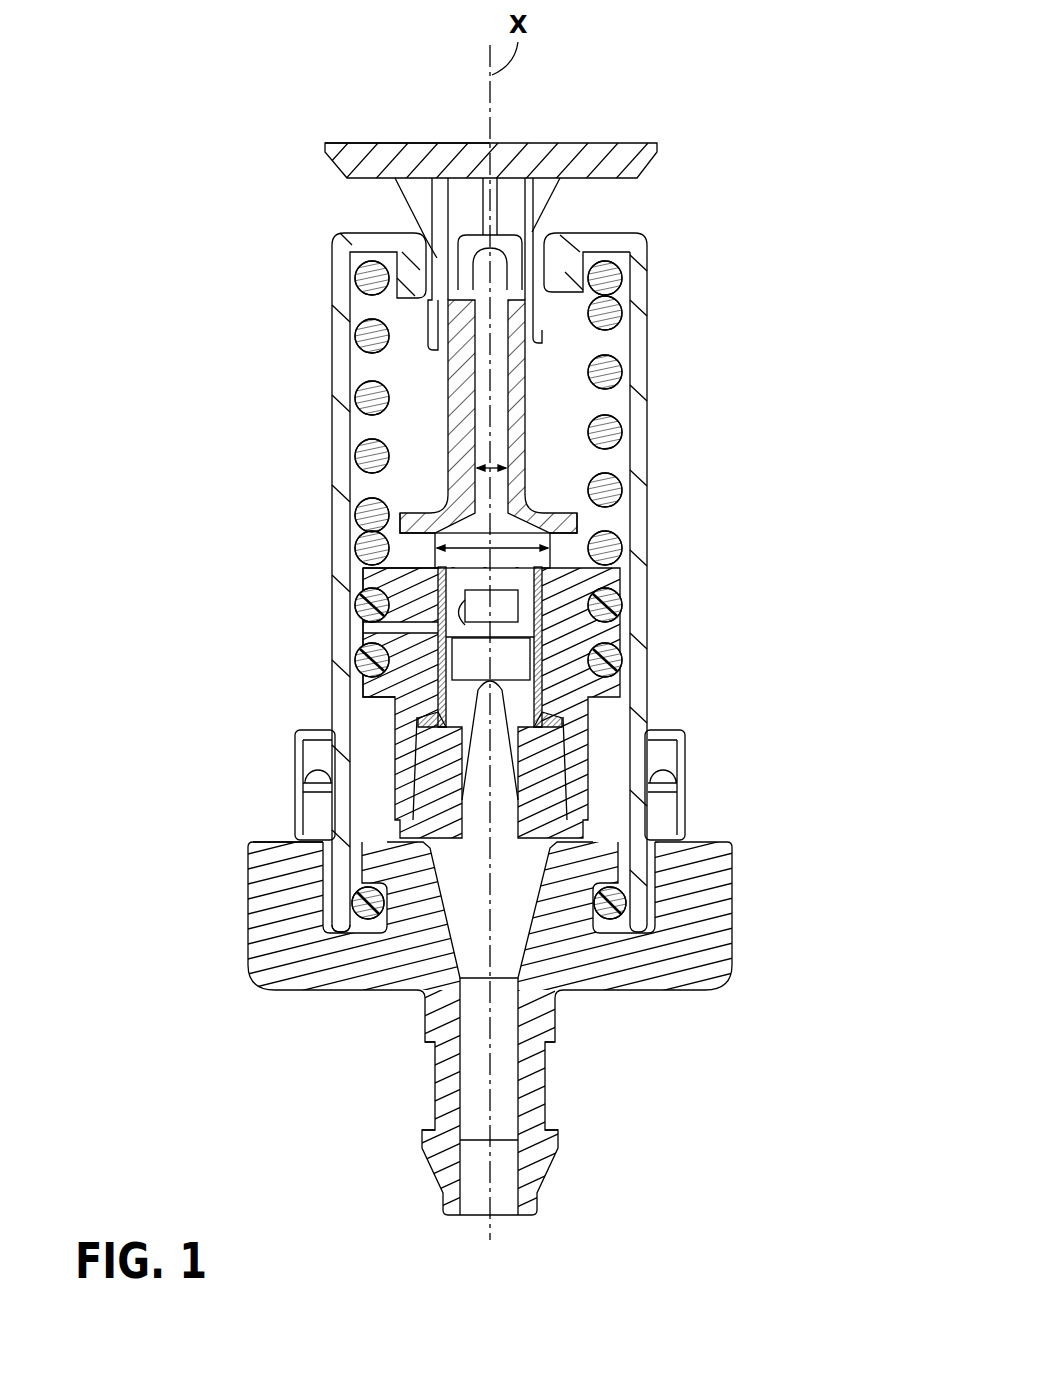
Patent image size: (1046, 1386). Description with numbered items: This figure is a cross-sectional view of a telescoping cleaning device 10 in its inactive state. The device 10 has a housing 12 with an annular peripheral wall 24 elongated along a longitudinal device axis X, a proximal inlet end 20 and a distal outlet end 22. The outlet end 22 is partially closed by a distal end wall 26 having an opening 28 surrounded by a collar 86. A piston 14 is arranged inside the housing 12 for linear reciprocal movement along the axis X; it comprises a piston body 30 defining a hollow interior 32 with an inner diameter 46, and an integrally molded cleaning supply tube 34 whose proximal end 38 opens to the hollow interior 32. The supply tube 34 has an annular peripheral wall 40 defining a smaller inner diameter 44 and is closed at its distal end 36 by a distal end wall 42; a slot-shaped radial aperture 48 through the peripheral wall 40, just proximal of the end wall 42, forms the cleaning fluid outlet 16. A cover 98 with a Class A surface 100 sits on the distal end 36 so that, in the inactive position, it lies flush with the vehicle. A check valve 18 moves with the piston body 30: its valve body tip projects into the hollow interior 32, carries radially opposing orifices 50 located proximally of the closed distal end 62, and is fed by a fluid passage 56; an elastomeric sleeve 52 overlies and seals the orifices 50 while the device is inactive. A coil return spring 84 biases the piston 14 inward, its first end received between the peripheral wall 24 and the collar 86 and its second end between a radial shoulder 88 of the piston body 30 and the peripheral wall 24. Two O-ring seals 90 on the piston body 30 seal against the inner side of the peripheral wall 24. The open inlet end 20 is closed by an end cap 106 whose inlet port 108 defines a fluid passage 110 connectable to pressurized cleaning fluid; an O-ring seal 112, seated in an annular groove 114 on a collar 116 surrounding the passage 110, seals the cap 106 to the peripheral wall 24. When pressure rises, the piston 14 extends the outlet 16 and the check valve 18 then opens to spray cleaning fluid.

The telescoping device 10 is at (198, 228).
The housing 12 is at (653, 511).
The piston 14 is at (395, 505).
The cleaning fluid outlet 16 is at (544, 226).
The check valve 18 is at (455, 655).
The proximal inlet end 20 is at (322, 920).
The distal outlet end 22 is at (331, 345).
The peripheral wall 24 is at (648, 588).
The distal end wall 26 is at (592, 250).
The opening 28 is at (420, 236).
The piston body 30 is at (690, 745).
The hollow interior 32 is at (395, 597).
The cleaning supply tube 34 is at (438, 422).
The distal end 36 is at (425, 240).
The proximal end 38 is at (450, 487).
The peripheral wall 40 is at (522, 363).
The distal end wall 42 is at (480, 222).
The inner diameter 44 is at (518, 468).
The inner diameter 46 is at (548, 545).
The radial aperture 48 is at (575, 290).
The orifice 50 is at (545, 660).
The elastomeric sleeve 52 is at (542, 625).
The fluid passage 56 is at (510, 775).
The distal end 62 is at (432, 627).
The return spring 84 is at (625, 372).
The collar 86 is at (385, 300).
The shoulder 88 is at (410, 570).
The O-ring seals 90 is at (356, 607).
The cover 98 is at (371, 132).
The Class A surface 100 is at (579, 143).
The end cap 106 is at (677, 998).
The inlet port 108 is at (545, 1075).
The fluid passage 110 is at (475, 1083).
The O-ring seal 112 is at (627, 900).
The annular groove 114 is at (395, 875).
The collar 116 is at (360, 862).